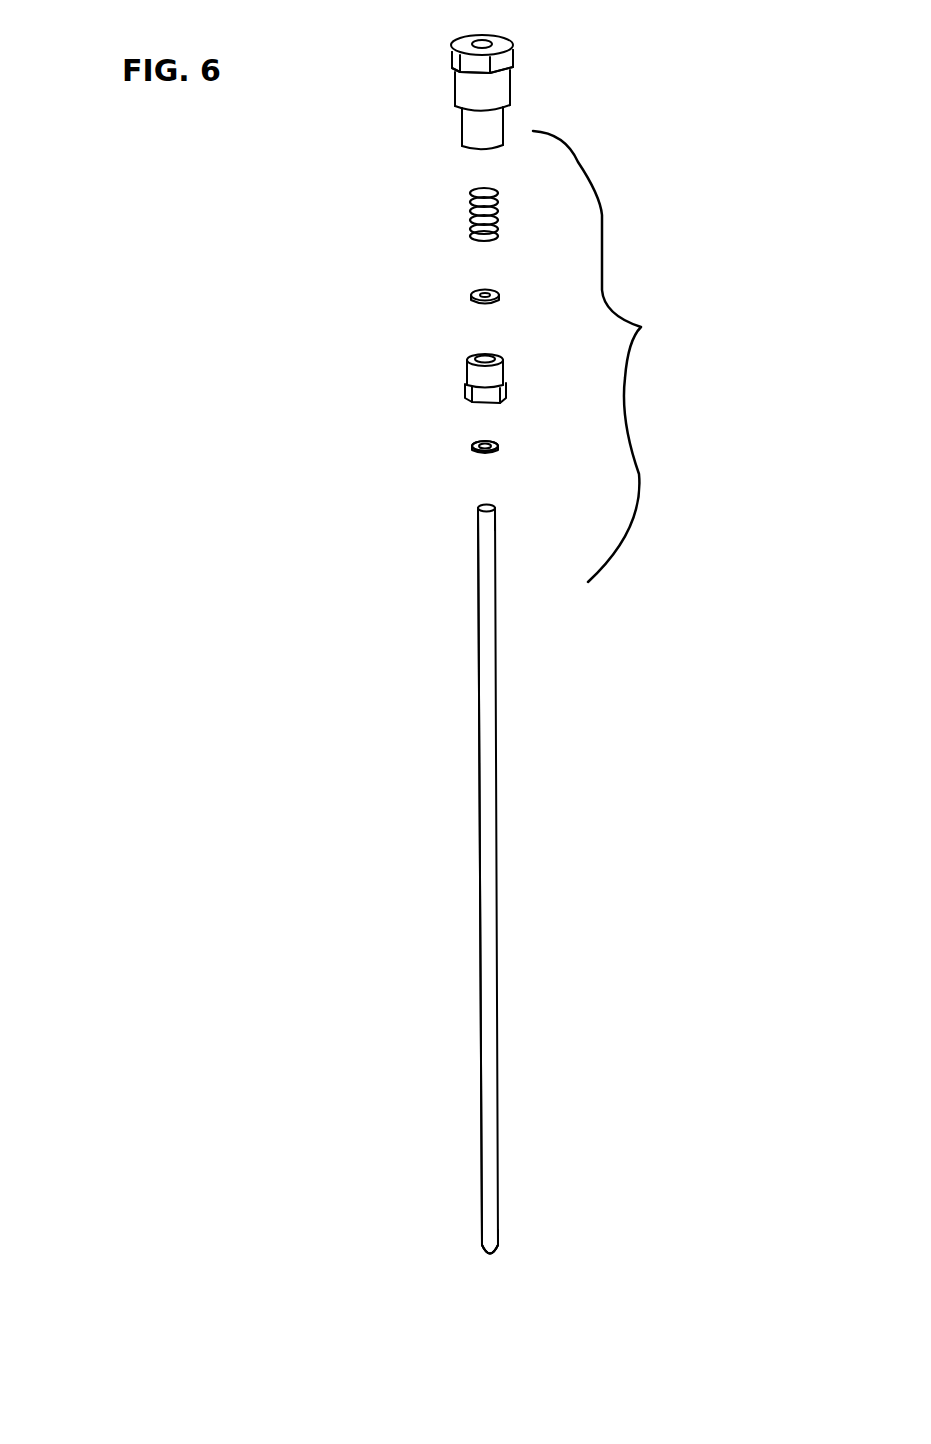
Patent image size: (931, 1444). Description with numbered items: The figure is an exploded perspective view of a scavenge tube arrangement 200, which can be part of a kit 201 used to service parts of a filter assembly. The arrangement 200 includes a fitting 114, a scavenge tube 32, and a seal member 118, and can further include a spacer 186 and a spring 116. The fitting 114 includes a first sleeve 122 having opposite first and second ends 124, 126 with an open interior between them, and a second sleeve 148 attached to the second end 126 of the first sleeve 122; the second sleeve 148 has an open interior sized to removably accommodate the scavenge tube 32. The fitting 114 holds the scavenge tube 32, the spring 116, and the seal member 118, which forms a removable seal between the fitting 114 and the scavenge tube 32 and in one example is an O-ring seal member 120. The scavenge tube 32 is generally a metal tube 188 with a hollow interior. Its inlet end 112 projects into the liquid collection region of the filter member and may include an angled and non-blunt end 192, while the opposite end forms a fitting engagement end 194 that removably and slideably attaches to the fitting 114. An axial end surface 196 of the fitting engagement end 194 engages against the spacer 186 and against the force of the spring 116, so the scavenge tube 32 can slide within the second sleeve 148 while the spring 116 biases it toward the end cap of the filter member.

The scavenge tube 32 is at (490, 881).
The inlet end 112 is at (482, 1252).
The fitting 114 is at (433, 333).
The spring 116 is at (470, 214).
The seal member 118 is at (477, 447).
The O-ring seal member 120 is at (494, 446).
The first sleeve 122 is at (534, 77).
The first end 124 is at (499, 38).
The second end 126 is at (462, 146).
The second sleeve 148 is at (470, 370).
The spacer 186 is at (496, 291).
The metal tube 188 is at (499, 773).
The angled and non-blunt end 192 is at (491, 1258).
The fitting engagement end 194 is at (492, 508).
The axial end surface 196 is at (480, 507).
The scavenge tube arrangement 200 is at (308, 337).
The kit 201 is at (629, 356).